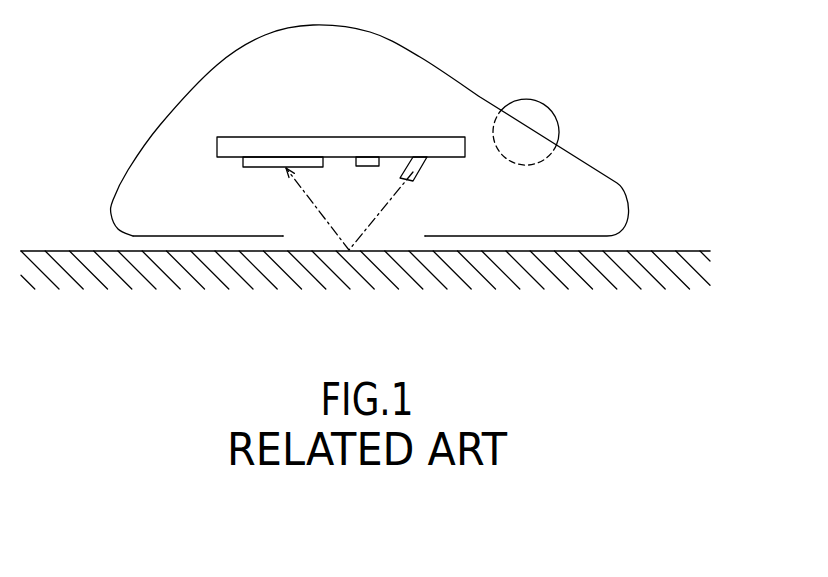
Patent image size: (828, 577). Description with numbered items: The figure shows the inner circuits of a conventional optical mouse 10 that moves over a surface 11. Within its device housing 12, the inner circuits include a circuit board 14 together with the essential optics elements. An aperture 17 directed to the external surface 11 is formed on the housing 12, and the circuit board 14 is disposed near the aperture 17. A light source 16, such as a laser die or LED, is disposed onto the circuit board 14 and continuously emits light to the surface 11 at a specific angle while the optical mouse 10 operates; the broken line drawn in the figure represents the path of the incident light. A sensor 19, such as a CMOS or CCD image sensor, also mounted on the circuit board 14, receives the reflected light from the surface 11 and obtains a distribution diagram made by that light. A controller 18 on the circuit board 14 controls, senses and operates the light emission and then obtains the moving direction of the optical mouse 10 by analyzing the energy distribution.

The optical mouse 10 is at (80, 42).
The surface 11 is at (663, 250).
The device housing 12 is at (157, 125).
The circuit board 14 is at (400, 144).
The light source 16 is at (419, 171).
The aperture 17 is at (297, 235).
The controller 18 is at (372, 162).
The sensor 19 is at (273, 162).